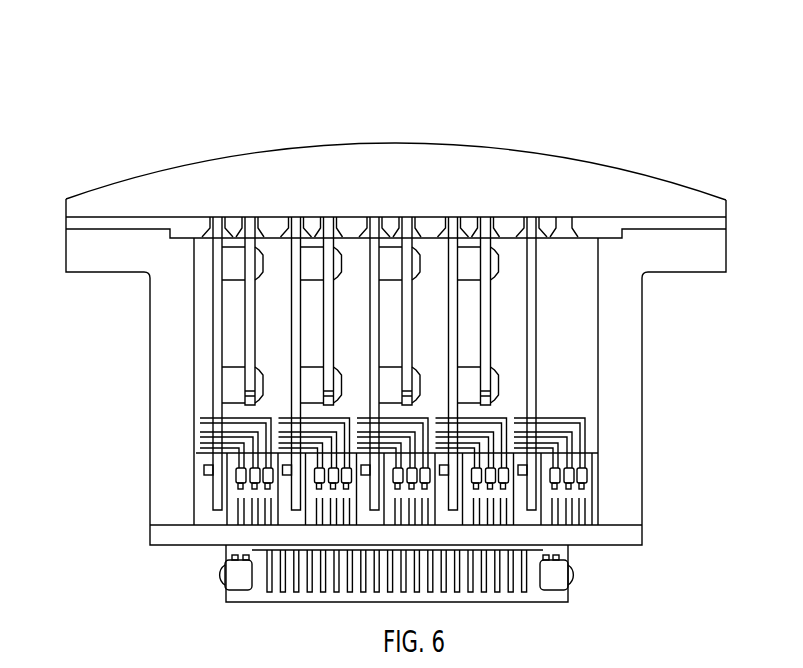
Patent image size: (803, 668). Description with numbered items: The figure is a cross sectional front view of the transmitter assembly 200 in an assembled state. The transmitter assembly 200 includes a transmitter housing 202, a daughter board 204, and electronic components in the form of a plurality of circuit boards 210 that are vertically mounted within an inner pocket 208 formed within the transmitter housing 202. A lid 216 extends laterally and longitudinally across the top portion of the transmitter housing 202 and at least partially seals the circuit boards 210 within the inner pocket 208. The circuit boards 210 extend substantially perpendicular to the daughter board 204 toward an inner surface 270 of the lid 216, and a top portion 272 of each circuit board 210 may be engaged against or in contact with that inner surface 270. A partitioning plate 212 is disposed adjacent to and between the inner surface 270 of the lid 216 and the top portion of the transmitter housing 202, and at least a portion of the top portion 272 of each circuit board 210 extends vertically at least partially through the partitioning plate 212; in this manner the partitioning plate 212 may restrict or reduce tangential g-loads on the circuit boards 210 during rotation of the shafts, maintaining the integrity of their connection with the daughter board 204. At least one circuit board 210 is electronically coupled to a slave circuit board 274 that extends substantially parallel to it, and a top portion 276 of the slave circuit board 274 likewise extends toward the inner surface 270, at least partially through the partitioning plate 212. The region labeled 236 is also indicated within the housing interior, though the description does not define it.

The transmitter assembly 200 is at (645, 48).
The transmitter housing 202 is at (163, 487).
The daughter board 204 is at (178, 548).
The inner pocket 208 is at (570, 318).
The circuit boards 210 is at (210, 305).
The partitioning plate 212 is at (710, 214).
The lid 216 is at (487, 160).
The circuit board assembly 236 is at (575, 357).
The inner surface 270 is at (348, 224).
The top portion 272 is at (209, 222).
The slave circuit board 274 is at (250, 336).
The top portion 276 is at (262, 225).